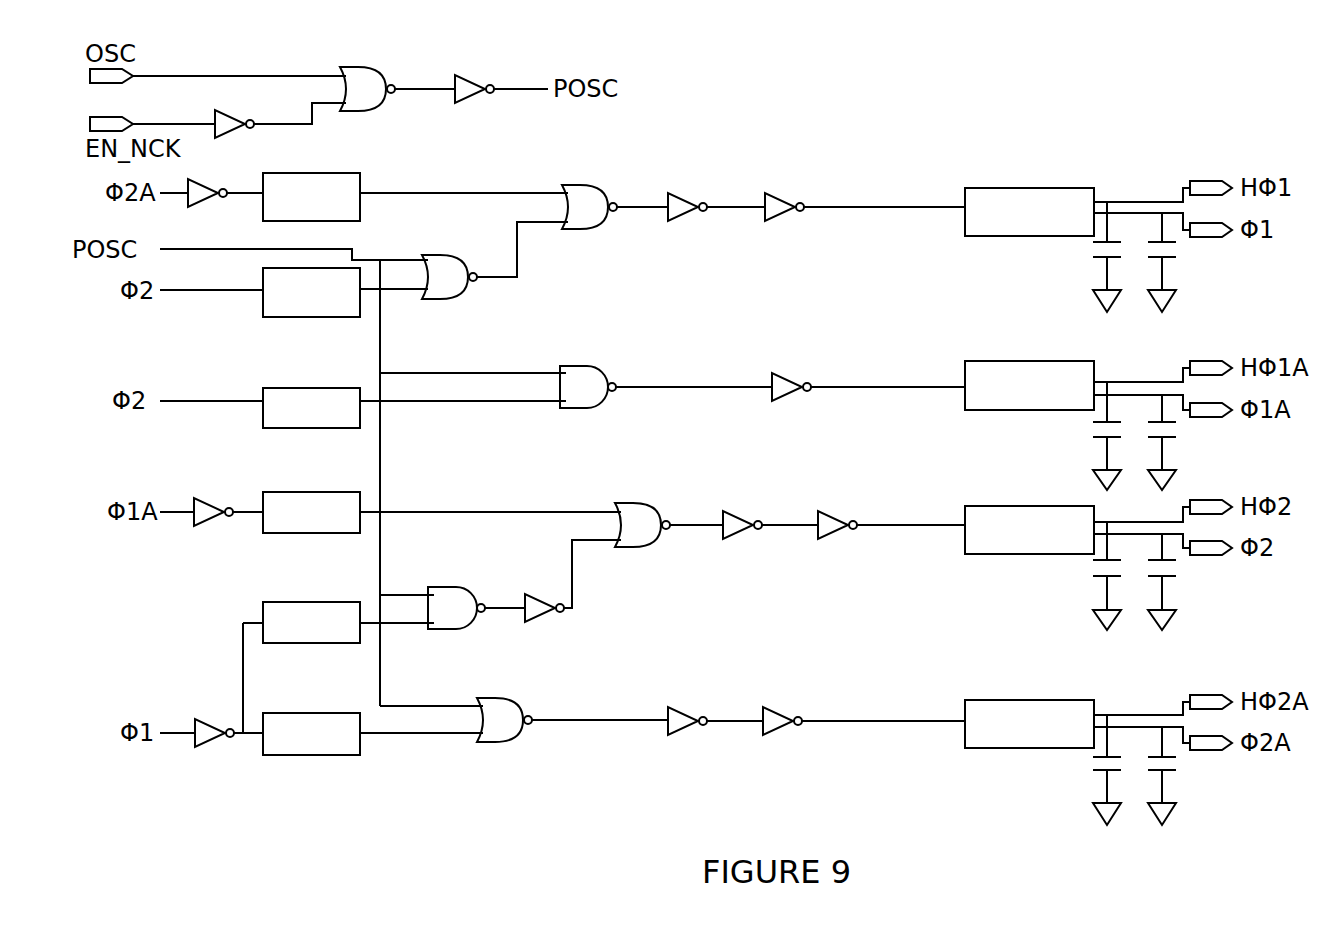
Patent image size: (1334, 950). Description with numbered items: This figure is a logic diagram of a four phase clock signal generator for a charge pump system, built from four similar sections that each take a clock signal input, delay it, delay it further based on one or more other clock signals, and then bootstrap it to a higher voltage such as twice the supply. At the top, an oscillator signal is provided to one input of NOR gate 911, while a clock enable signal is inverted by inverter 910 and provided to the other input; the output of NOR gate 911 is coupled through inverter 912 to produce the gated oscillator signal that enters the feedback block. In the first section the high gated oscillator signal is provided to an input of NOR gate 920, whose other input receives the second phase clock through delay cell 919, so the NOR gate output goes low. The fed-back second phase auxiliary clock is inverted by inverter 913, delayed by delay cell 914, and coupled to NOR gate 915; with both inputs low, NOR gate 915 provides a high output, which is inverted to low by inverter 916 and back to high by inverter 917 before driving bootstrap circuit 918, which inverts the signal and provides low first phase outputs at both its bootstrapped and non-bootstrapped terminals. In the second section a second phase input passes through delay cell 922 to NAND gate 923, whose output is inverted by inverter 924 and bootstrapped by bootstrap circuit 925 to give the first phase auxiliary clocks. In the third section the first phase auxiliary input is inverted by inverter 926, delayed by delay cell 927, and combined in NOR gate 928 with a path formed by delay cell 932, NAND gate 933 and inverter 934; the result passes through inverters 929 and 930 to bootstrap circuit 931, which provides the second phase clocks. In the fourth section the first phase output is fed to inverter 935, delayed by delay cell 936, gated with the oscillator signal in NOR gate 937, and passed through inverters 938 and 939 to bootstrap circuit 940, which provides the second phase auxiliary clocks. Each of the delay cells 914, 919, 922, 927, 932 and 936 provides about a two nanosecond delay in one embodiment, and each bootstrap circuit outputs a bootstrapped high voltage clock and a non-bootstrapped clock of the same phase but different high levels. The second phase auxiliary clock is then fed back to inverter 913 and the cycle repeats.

The inverter 910 is at (232, 136).
The NOR gate 911 is at (355, 110).
The inverter 912 is at (468, 102).
The inverter 913 is at (205, 207).
The delay cell 914 is at (348, 221).
The NOR gate 915 is at (578, 228).
The inverter 916 is at (680, 221).
The inverter 917 is at (777, 221).
The bootstrap circuit 918 is at (1046, 236).
The delay cell 919 is at (300, 317).
The NOR gate 920 is at (440, 298).
The delay cell 922 is at (300, 428).
The NAND gate 923 is at (575, 408).
The inverter 924 is at (785, 401).
The bootstrap circuit 925 is at (1046, 410).
The inverter 926 is at (208, 526).
The delay cell 927 is at (302, 533).
The NOR gate 928 is at (630, 547).
The inverter 929 is at (735, 539).
The inverter 930 is at (830, 539).
The bootstrap circuit 931 is at (1046, 554).
The delay cell 932 is at (302, 643).
The NAND gate 933 is at (440, 629).
The inverter 934 is at (535, 622).
The inverter 935 is at (208, 747).
The delay cell 936 is at (302, 755).
The NOR gate 937 is at (490, 742).
The inverter 938 is at (680, 735).
The inverter 939 is at (775, 735).
The bootstrap circuit 940 is at (1046, 748).